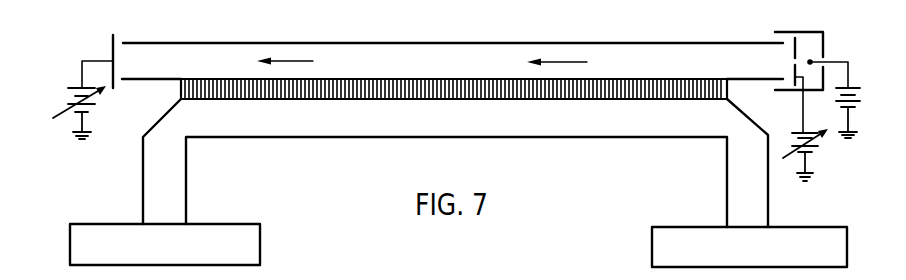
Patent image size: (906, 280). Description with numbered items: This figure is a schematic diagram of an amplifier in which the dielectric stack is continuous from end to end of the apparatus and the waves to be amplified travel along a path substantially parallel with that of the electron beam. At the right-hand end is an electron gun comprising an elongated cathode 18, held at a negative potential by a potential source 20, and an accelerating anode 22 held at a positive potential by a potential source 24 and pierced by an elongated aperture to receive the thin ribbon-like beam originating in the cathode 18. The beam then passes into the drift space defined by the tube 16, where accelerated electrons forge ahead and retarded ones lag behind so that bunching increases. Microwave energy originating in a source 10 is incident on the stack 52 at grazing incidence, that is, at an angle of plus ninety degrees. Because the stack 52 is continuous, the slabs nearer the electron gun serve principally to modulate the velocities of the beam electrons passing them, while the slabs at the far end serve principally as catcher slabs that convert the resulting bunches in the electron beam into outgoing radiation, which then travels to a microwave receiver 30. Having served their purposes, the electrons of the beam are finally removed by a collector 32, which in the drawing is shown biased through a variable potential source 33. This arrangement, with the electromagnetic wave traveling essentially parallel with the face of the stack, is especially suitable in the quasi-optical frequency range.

The source 10 is at (651, 240).
The tube 16 is at (568, 43).
The cathode 18 is at (811, 60).
The potential source 20 is at (842, 105).
The accelerating anode 22 is at (793, 50).
The potential source 24 is at (822, 143).
The microwave receiver 30 is at (261, 248).
The collector 32 is at (112, 50).
The variable collector bias battery 33 is at (94, 108).
The stack 52 is at (418, 91).